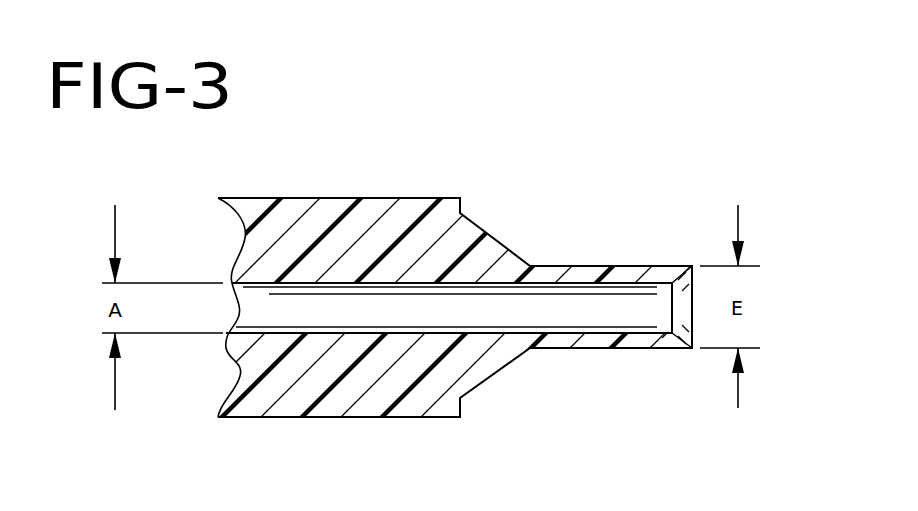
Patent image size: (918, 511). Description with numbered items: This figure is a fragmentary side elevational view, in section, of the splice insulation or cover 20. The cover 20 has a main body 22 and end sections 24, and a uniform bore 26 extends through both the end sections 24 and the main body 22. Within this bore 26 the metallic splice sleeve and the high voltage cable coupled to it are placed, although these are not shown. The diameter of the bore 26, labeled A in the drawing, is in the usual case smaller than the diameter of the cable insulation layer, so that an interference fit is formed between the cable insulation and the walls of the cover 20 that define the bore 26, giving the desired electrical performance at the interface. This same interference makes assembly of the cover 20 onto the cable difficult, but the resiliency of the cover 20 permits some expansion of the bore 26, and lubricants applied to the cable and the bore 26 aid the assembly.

The splice cover 20 is at (438, 269).
The main body 22 is at (417, 197).
The end sections 24 is at (582, 267).
The uniform bore 26 is at (613, 283).